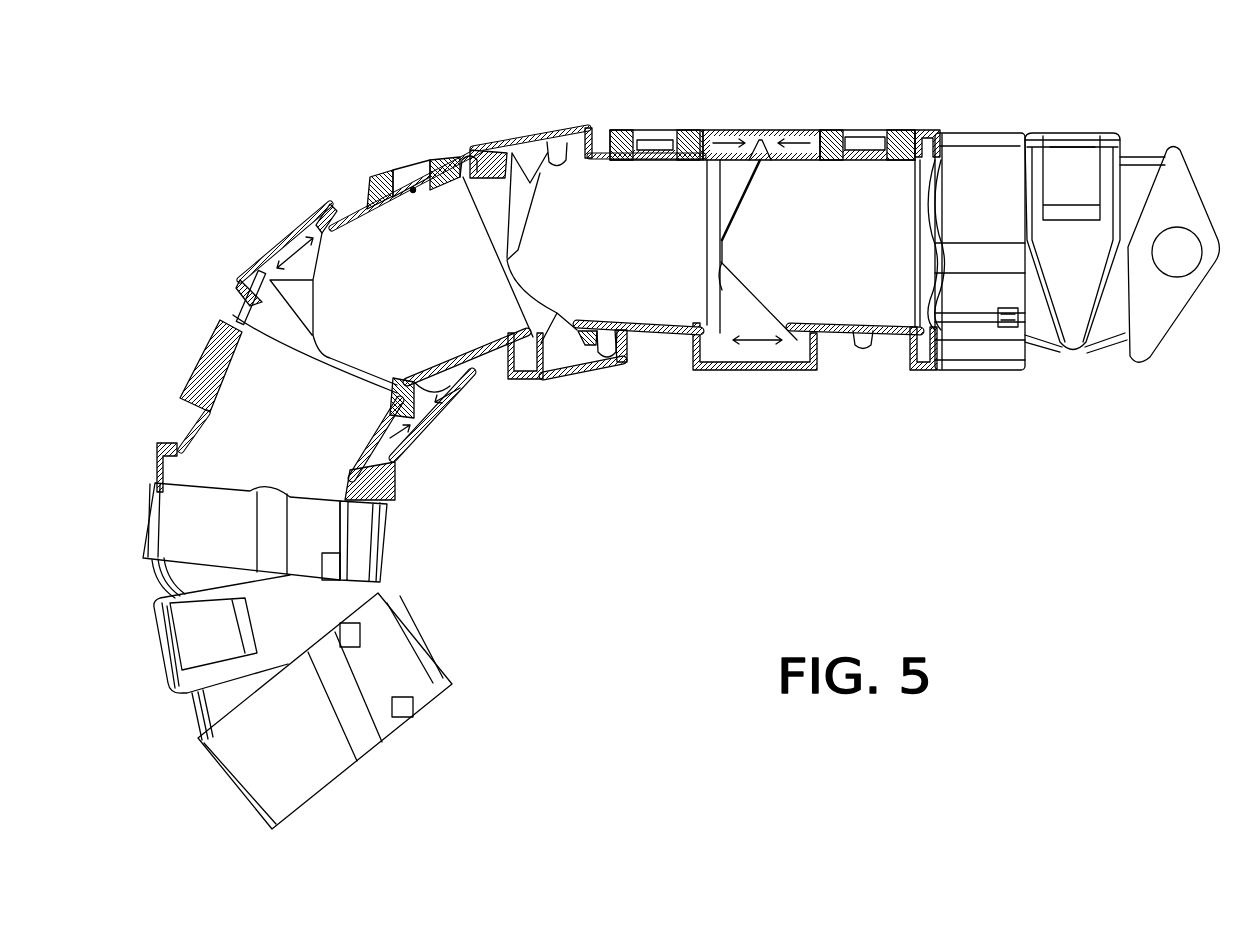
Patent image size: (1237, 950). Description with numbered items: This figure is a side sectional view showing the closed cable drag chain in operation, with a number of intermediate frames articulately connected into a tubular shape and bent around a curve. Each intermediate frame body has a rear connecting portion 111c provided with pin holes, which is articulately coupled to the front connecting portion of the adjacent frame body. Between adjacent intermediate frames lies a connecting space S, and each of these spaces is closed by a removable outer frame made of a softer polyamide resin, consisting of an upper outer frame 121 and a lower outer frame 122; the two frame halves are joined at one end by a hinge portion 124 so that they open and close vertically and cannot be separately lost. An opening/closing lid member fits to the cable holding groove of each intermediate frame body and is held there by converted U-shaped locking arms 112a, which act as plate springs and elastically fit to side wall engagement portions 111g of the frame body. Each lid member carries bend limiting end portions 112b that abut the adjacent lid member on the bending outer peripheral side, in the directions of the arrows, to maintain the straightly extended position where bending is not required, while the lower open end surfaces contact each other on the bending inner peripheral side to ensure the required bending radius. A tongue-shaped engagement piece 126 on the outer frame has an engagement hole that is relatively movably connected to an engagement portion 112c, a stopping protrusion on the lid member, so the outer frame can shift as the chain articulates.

The upper outer frame 121 is at (508, 146).
The lower outer frame 122 is at (437, 428).
The hinge portion 124 is at (1008, 328).
The engagement piece 126 is at (652, 142).
The locking arm 112a is at (1077, 135).
The bend limiting end portion 112b is at (318, 213).
The engagement portion 112c is at (437, 158).
The side wall engagement portion 111g is at (1074, 212).
The rear connecting portion 111c is at (1165, 297).
The connecting space S is at (534, 158).